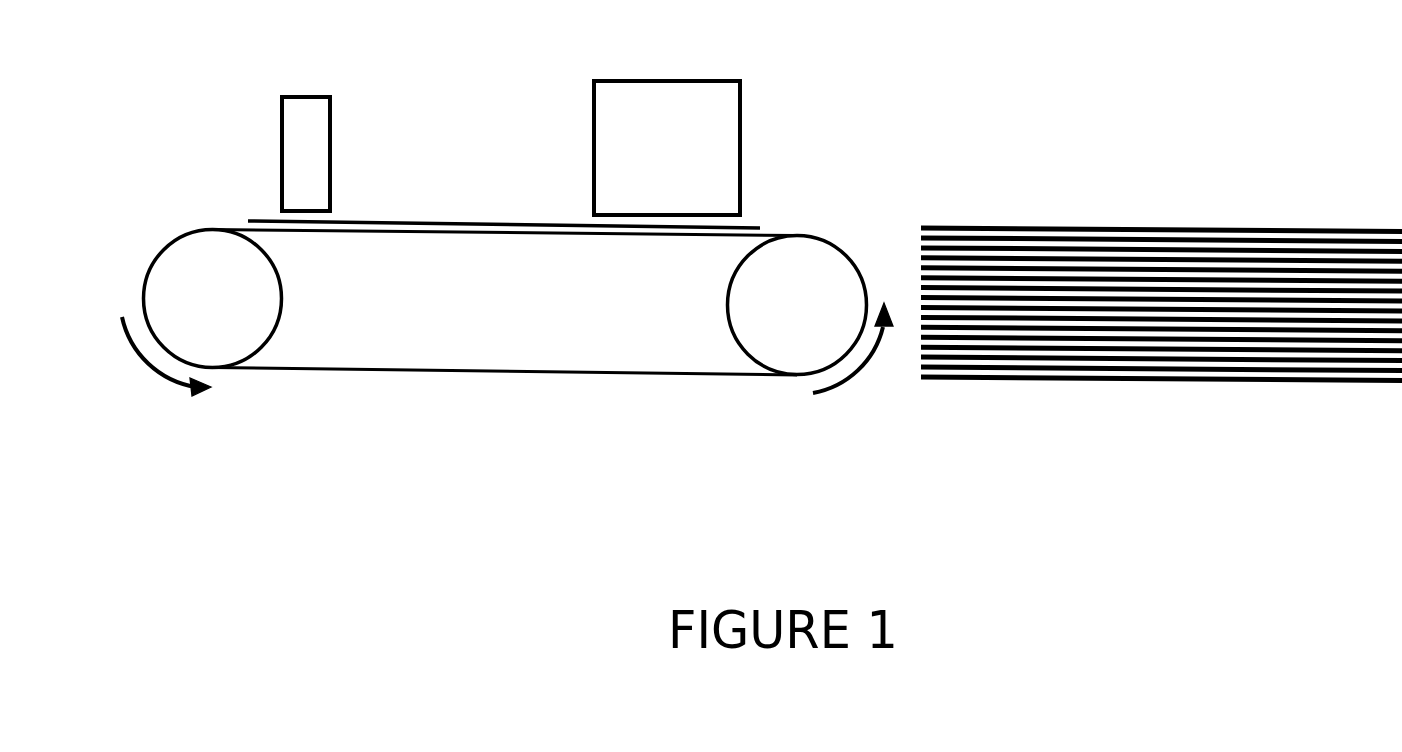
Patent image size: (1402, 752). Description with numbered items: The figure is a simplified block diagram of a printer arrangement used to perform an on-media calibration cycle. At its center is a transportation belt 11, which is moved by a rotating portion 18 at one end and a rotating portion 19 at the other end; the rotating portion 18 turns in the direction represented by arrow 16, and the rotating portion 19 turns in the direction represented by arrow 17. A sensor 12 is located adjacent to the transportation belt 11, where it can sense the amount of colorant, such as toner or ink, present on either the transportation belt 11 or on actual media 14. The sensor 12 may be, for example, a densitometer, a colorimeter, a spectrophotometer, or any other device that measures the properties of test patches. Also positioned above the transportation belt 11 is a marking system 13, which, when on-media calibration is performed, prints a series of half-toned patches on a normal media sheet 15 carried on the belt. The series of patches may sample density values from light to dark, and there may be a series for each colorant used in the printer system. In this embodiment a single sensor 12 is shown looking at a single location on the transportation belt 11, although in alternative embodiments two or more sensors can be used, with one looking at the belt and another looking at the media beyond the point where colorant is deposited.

The transportation belt 11 is at (500, 240).
The sensor 12 is at (308, 92).
The marking system 13 is at (651, 74).
The actual media 14 is at (1077, 387).
The normal media sheet 15 is at (425, 217).
The arrow 16 is at (168, 393).
The arrow 17 is at (818, 402).
The rotating portion 18 is at (228, 305).
The rotating portion 19 is at (803, 319).